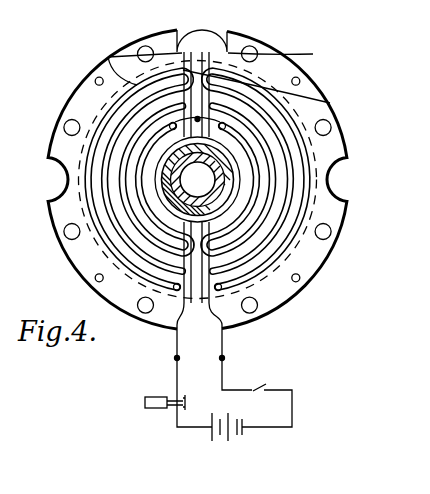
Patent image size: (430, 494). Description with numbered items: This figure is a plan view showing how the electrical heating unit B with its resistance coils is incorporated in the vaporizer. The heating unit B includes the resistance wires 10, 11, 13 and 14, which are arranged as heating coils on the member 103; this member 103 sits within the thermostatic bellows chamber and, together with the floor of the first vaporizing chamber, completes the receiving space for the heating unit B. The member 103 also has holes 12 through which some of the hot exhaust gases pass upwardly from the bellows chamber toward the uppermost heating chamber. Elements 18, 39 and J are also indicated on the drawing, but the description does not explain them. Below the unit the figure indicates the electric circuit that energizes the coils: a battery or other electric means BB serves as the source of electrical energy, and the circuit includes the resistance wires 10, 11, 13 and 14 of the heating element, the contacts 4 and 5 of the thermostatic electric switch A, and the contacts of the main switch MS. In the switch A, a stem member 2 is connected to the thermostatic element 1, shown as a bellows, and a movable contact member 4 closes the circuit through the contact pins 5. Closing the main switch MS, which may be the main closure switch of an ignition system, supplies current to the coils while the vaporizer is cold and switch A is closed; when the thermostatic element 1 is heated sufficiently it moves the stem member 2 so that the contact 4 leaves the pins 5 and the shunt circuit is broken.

The resistance wire 10 is at (228, 352).
The resistance wire 11 is at (108, 57).
The holes 12 is at (178, 30).
The resistance wire 13 is at (313, 54).
The resistance wire 14 is at (173, 351).
The conductor lead 18 is at (3, 240).
The central hub 39 is at (197, 180).
The member 103 is at (318, 200).
The electrical heating unit B is at (300, 100).
The junction J is at (0, 42).
The main switch MS is at (267, 379).
The battery BB is at (227, 437).
The thermostatic element 1 is at (150, 410).
The stem member 2 is at (173, 410).
The movable contact member 4 is at (187, 402).
The contact pins 5 is at (183, 408).
The thermostatic electric switch A is at (178, 400).